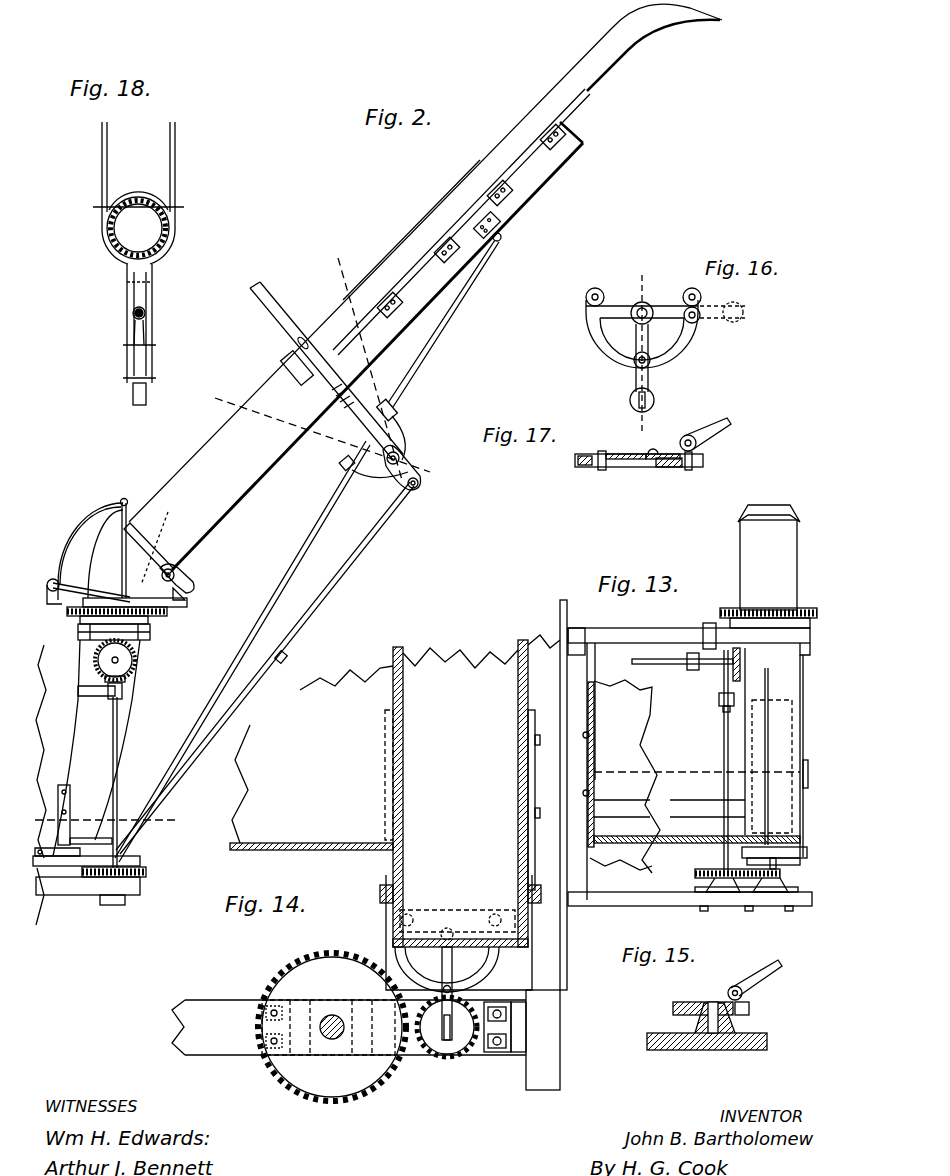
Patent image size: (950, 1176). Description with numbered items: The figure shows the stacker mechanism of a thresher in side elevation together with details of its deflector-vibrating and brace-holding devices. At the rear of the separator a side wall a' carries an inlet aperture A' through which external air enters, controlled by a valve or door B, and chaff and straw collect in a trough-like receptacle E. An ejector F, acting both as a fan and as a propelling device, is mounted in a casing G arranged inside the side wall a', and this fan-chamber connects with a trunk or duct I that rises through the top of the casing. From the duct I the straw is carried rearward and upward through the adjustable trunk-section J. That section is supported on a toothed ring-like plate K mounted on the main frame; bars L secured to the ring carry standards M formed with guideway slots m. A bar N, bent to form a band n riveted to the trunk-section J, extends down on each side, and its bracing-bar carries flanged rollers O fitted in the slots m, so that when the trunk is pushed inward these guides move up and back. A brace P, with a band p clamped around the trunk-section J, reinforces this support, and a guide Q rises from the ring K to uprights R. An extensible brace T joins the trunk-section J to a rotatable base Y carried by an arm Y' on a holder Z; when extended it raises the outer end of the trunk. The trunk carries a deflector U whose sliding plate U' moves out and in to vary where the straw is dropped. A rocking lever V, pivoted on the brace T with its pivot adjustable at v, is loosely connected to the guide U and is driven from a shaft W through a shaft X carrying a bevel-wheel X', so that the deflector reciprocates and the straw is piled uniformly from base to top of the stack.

In FIG. 18, the adjustable trunk-section J is at (152, 231).
In FIG. 2, the adjustable trunk-section J is at (425, 287).
In FIG. 13, the adjustable trunk-section J is at (769, 557).
In FIG. 18, the guide or deflector U is at (138, 185).
In FIG. 2, the guide or deflector U is at (411, 230).
In FIG. 2, the concave-convex sheet-metal plate U' is at (461, 222).
In FIG. 18, the rocking lever V is at (160, 300).
In FIG. 2, the rocking lever V is at (370, 400).
In FIG. 2, the pivot-adjusting means v is at (342, 462).
In FIG. 18, the extensible brace T is at (134, 313).
In FIG. 2, the extensible brace T is at (242, 651).
In FIG. 13, the extensible brace T is at (770, 680).
In FIG. 17, the extensible brace T is at (705, 432).
In FIG. 2, the bracket i is at (505, 228).
In FIG. 2, the shaft X is at (138, 780).
In FIG. 14, the shaft X is at (334, 1007).
In FIG. 13, the shaft X is at (711, 761).
In FIG. 2, the bevel-wheel X' is at (136, 677).
In FIG. 13, the bevel-wheel X' is at (709, 701).
In FIG. 14, the rotatable base Y is at (436, 1021).
In FIG. 16, the rotatable base Y is at (657, 400).
In FIG. 17, the rotatable base Y is at (692, 463).
In FIG. 2, the arm Y' is at (73, 820).
In FIG. 14, the arm Y' is at (457, 969).
In FIG. 16, the arm Y' is at (668, 350).
In FIG. 17, the arm Y' is at (646, 474).
In FIG. 16, the holder Z is at (597, 338).
In FIG. 17, the holder Z is at (598, 468).
In FIG. 2, the guide Q is at (99, 514).
In FIG. 2, the uprights R is at (127, 500).
In FIG. 2, the bent bar N is at (128, 520).
In FIG. 2, the band n is at (154, 548).
In FIG. 2, the antifriction wheels or rollers O is at (172, 562).
In FIG. 2, the standards M is at (178, 570).
In FIG. 2, the slots m is at (193, 590).
In FIG. 2, the bars L is at (187, 603).
In FIG. 2, the toothed ring-like plate K is at (160, 618).
In FIG. 13, the toothed ring-like plate K is at (817, 612).
In FIG. 2, the trunk or duct I is at (142, 655).
In FIG. 13, the trunk or duct I is at (810, 655).
In FIG. 2, the brace P is at (98, 554).
In FIG. 2, the band p is at (107, 593).
In FIG. 2, the shaft W is at (95, 676).
In FIG. 13, the shaft W is at (657, 659).
In FIG. 2, the side wall a' is at (79, 713).
In FIG. 13, the side wall a' is at (578, 705).
In FIG. 13, the inlet aperture A' is at (605, 737).
In FIG. 13, the valve or door B is at (594, 762).
In FIG. 14, the receptacle E is at (279, 784).
In FIG. 13, the receptacle E is at (640, 790).
In FIG. 13, the ejector F is at (790, 728).
In FIG. 14, the casing or box G is at (460, 815).
In FIG. 13, the casing or box G is at (790, 836).